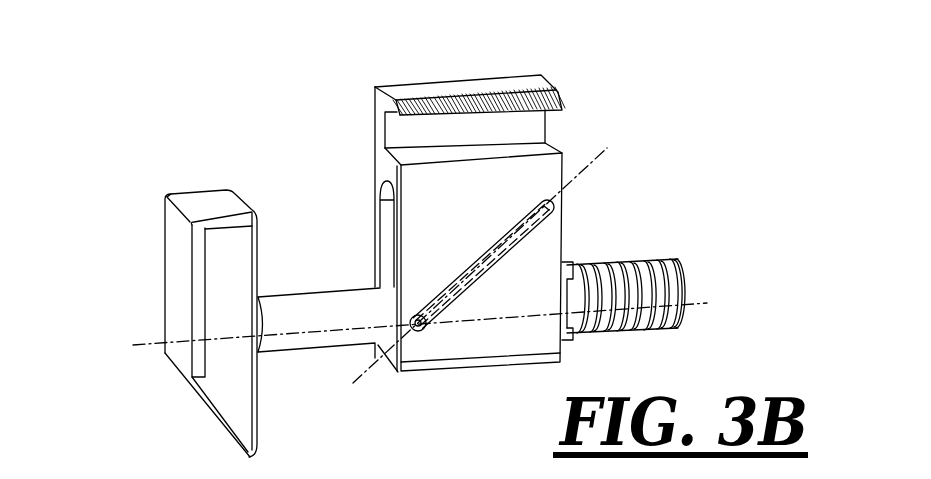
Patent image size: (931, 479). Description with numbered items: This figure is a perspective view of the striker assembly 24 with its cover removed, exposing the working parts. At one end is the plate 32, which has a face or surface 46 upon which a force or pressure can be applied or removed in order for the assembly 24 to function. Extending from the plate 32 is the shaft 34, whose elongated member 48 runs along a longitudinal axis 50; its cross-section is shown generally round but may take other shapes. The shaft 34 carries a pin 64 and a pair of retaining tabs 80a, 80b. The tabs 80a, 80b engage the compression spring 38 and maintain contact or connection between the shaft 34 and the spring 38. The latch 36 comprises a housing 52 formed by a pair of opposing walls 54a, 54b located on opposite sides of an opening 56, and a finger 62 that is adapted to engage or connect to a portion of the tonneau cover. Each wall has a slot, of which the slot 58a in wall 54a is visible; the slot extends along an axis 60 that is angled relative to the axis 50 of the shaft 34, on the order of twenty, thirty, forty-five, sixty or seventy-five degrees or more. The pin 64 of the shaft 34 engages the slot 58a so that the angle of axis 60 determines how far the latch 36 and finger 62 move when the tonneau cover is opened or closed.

The striker assembly 24 is at (282, 92).
The plate 32 is at (211, 186).
The shaft 34 is at (302, 360).
The latch 36 is at (536, 66).
The compression spring 38 is at (670, 247).
The face or surface 46 is at (180, 248).
The elongated member 48 is at (280, 310).
The longitudinal axis 50 is at (128, 344).
The housing 52 is at (503, 345).
The wall 54a is at (466, 220).
The wall 54b is at (383, 232).
The opening 56 is at (387, 278).
The slot 58a is at (463, 281).
The axis 60 is at (587, 168).
The finger 62 is at (391, 122).
The pin 64 is at (423, 332).
The retaining tab 80a is at (571, 266).
The retaining tab 80b is at (573, 340).